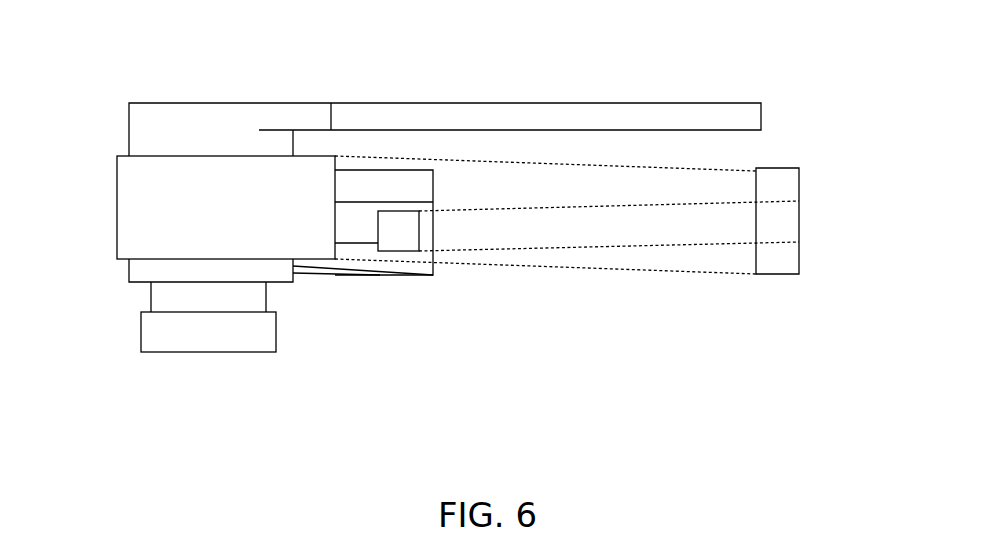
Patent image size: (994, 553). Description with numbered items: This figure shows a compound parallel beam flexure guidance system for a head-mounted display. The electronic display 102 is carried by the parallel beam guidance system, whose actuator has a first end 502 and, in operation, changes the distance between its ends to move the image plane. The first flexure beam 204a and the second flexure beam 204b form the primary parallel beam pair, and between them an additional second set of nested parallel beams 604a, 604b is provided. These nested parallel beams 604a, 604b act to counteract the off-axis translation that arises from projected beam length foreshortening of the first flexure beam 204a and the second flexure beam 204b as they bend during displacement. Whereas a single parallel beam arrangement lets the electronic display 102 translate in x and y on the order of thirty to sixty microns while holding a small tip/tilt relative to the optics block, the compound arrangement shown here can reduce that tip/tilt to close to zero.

The electronic display 102 is at (573, 113).
The first end 502 is at (120, 243).
The first flexure beam 204a is at (719, 171).
The second flexure beam 204b is at (740, 274).
The nested parallel beam 604a is at (732, 202).
The nested parallel beam 604b is at (730, 243).